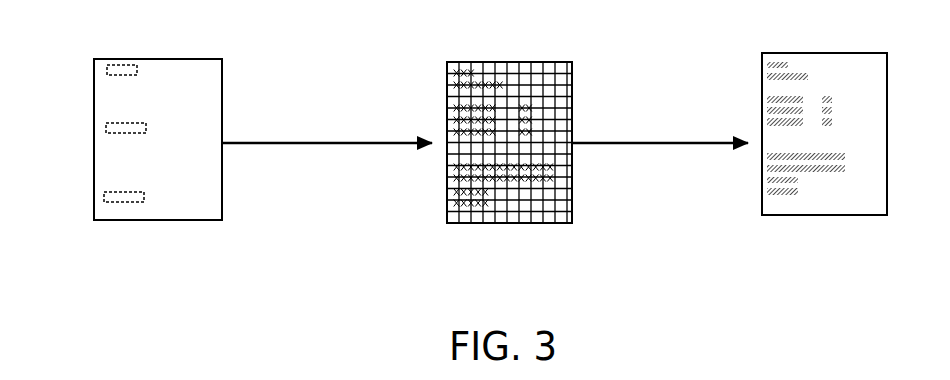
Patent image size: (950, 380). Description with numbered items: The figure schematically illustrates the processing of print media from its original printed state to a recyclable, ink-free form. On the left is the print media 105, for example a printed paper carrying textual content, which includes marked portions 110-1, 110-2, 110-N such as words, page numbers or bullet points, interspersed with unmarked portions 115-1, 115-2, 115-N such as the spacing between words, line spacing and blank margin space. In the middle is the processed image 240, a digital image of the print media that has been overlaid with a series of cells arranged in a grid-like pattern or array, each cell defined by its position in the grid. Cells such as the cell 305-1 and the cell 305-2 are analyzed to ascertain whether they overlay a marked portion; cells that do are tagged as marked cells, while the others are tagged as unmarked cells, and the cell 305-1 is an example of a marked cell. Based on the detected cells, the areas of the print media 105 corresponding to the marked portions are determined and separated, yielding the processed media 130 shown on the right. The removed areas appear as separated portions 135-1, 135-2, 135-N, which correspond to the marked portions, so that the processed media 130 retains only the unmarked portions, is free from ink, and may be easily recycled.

The print media 105 is at (192, 59).
The marked portion 110-1 is at (109, 69).
The marked portion 110-2 is at (108, 126).
The marked portion 110-N is at (106, 197).
The unmarked portion 115-1 is at (100, 84).
The unmarked portion 115-2 is at (99, 143).
The unmarked portion 115-N is at (100, 210).
The processed image 240 is at (532, 62).
The cell 305-1 is at (453, 70).
The cell 305-2 is at (448, 143).
The processed media 130 is at (855, 53).
The separated portion 135-1 is at (768, 63).
The separated portion 135-2 is at (768, 122).
The separated portion 135-N is at (768, 193).